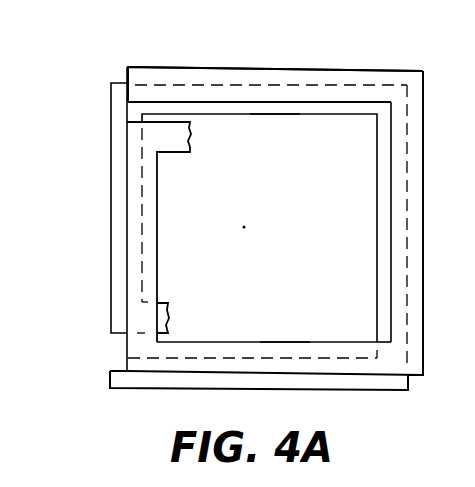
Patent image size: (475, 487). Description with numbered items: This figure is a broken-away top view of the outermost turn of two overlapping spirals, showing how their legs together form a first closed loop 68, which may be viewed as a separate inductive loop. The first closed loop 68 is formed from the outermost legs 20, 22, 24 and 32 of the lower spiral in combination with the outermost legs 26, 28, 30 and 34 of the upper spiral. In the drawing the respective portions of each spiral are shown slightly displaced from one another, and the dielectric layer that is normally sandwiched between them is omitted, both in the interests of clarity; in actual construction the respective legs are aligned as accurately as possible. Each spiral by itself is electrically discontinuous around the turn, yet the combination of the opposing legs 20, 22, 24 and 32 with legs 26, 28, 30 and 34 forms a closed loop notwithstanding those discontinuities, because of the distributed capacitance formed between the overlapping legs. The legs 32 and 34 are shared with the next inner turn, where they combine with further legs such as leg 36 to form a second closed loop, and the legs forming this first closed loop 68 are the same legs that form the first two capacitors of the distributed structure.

The outermost leg of spiral 20 is at (352, 389).
The outermost leg of spiral 22 is at (380, 203).
The outermost leg of spiral 24 is at (276, 118).
The outermost leg of spiral 26 is at (286, 340).
The outermost leg of spiral 28 is at (424, 135).
The outermost leg of spiral 30 is at (296, 67).
The leg of spiral 32 is at (113, 212).
The leg of spiral 34 is at (158, 220).
The leg of spiral 36 is at (449, 216).
The first closed loop 68 is at (167, 52).